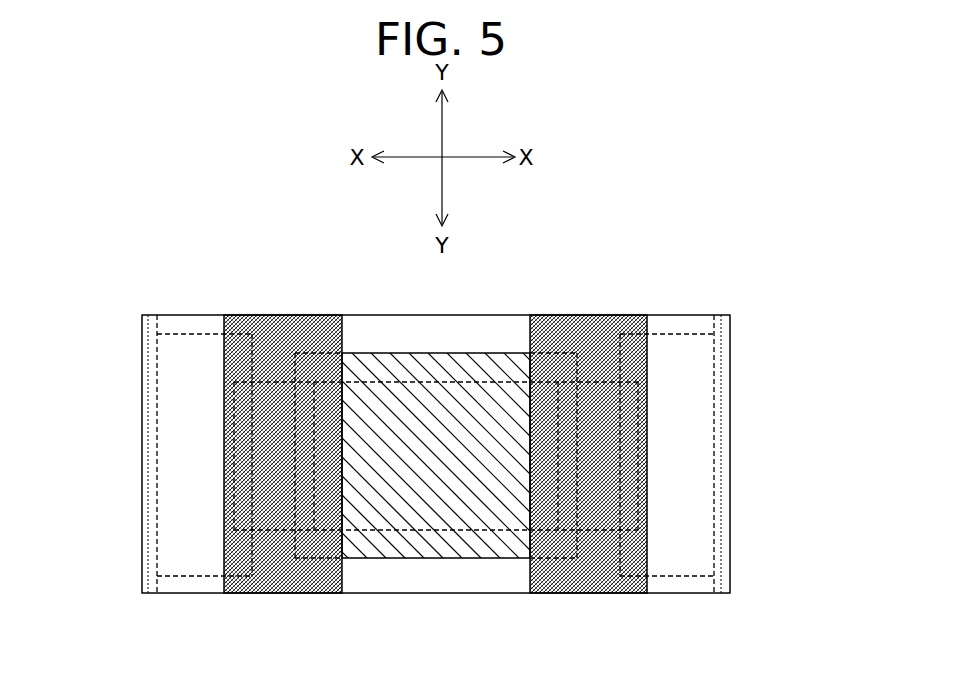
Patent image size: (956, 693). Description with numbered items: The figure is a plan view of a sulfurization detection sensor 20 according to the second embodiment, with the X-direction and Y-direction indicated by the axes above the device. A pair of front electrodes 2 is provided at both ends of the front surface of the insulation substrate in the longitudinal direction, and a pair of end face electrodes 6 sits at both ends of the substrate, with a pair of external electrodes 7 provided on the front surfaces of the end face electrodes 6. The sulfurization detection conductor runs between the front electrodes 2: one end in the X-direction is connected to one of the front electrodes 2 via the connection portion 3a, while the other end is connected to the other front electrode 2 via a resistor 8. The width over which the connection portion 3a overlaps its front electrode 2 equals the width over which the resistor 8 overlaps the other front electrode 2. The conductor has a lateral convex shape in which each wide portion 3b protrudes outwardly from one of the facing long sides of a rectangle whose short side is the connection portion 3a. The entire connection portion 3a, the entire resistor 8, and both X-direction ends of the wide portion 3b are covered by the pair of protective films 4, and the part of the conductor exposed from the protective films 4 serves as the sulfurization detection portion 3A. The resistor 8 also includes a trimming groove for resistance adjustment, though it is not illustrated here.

The sulfurization detection sensor 20 is at (737, 296).
The front electrodes 2 is at (193, 580).
The sulfurization detection portion 3A is at (457, 490).
The connection portion 3a is at (283, 530).
The wide portions 3b is at (397, 372).
The protective films 4 is at (287, 340).
The end face electrodes 6 is at (150, 435).
The external electrodes 7 is at (205, 360).
The resistor 8 is at (596, 530).